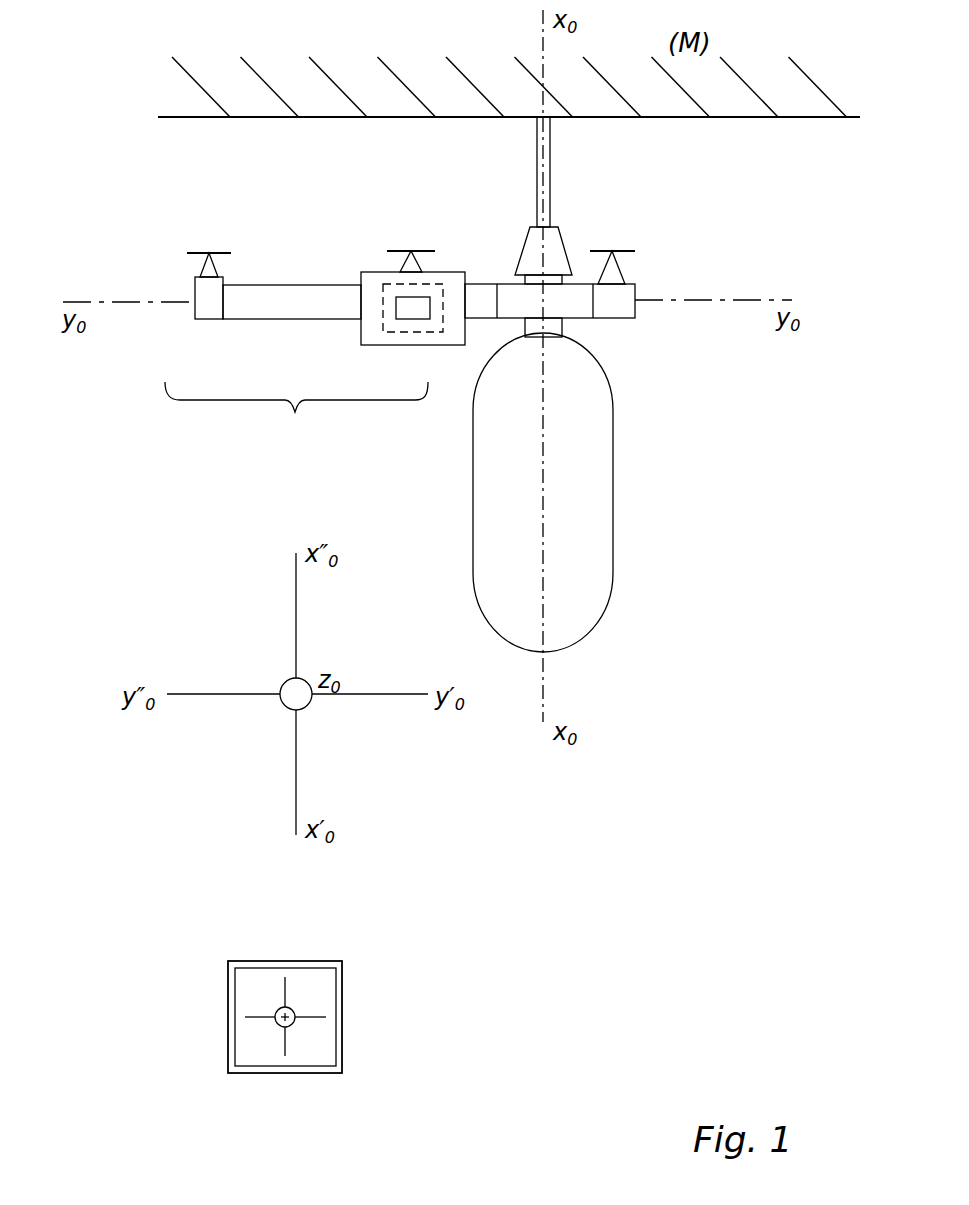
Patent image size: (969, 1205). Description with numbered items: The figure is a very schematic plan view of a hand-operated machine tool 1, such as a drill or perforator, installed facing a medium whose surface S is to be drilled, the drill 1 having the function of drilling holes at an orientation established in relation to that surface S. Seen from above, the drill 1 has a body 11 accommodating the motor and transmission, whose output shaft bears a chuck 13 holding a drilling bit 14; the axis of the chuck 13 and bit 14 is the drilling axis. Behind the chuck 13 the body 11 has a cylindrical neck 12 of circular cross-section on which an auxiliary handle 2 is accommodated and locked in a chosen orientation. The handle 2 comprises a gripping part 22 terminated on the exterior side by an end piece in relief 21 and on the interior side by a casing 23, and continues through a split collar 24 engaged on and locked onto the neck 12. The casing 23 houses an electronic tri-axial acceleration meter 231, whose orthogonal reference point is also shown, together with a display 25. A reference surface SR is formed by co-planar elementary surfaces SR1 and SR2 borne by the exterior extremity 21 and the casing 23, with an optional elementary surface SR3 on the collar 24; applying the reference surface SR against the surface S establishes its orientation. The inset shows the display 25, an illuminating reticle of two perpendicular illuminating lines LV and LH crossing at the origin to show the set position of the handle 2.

In FIG. 1, the hand-operated machine tool 1 is at (652, 585).
In FIG. 1, the body 11 is at (613, 510).
In FIG. 1, the cylindrical neck 12 is at (555, 327).
In FIG. 1, the chuck 13 is at (555, 247).
In FIG. 1, the drilling bit 14 is at (548, 150).
In FIG. 1, the auxiliary handle 2 is at (296, 415).
In FIG. 1, the end piece in relief 21 is at (212, 315).
In FIG. 1, the gripping part 22 is at (240, 305).
In FIG. 1, the casing 23 is at (361, 338).
In FIG. 1, the electronic tri-axial acceleration meter 231 is at (398, 305).
In FIG. 1, the split collar 24 is at (575, 307).
In FIG. 1, the display 25 is at (438, 335).
In FIG. 1A, the display 25 is at (324, 960).
In FIG. 1, the surface S is at (392, 120).
In FIG. 1, the reference surface SR is at (191, 249).
In FIG. 1, the elementary surface SR1 is at (215, 250).
In FIG. 1, the elementary surface SR2 is at (418, 250).
In FIG. 1, the elementary surface SR3 is at (620, 250).
In FIG. 1A, the illuminating line LV is at (285, 987).
In FIG. 1A, the illuminating line LH is at (310, 1018).